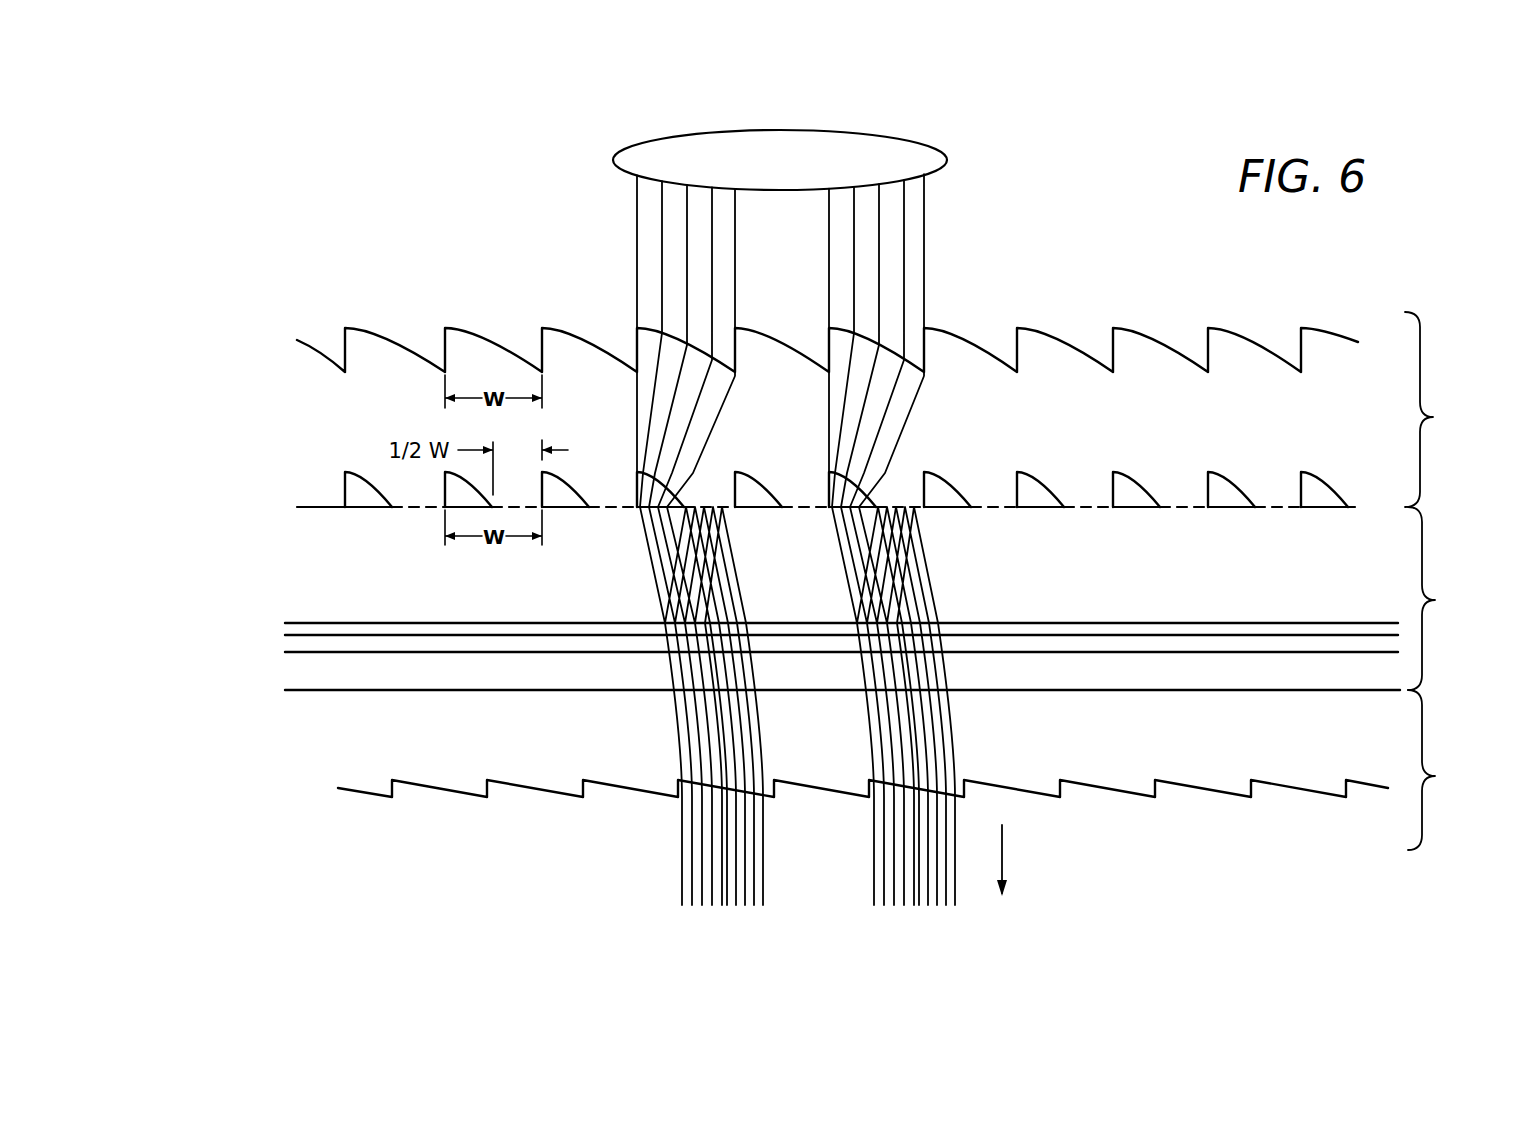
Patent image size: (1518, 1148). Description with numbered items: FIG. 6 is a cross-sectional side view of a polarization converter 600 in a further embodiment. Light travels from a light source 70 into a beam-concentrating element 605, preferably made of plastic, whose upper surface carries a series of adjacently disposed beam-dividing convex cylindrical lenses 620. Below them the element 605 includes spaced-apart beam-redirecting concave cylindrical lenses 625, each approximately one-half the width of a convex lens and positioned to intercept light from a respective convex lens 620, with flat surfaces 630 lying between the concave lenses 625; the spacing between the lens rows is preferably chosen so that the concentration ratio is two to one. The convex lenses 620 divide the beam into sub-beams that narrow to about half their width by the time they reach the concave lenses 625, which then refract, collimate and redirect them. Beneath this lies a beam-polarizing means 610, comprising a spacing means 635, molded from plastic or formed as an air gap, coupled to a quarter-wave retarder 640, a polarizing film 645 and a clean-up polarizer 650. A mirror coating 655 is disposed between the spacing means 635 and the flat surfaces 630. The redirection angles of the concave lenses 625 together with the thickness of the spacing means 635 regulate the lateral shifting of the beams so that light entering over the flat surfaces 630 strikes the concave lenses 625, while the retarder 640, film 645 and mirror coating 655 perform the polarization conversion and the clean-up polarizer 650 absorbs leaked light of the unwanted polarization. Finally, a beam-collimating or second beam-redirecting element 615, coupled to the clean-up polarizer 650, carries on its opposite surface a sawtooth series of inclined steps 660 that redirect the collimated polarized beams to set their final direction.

The light source 70 is at (903, 137).
The polarization converter 600 is at (1347, 256).
The beam-concentrating element 605 is at (1440, 418).
The beam-polarizing means 610 is at (1442, 600).
The beam-collimating or second beam-redirecting element 615 is at (1442, 776).
The convex cylindrical lenses 620 is at (1153, 333).
The concave cylindrical lenses 625 is at (1040, 500).
The flat surfaces 630 is at (1188, 505).
The spacing means 635 is at (1095, 603).
The quarter-wave retarder 640 is at (289, 631).
The polarizing film 645 is at (289, 645).
The clean-up polarizer 650 is at (292, 678).
The mirror coating 655 is at (322, 513).
The inclined steps 660 is at (1188, 778).